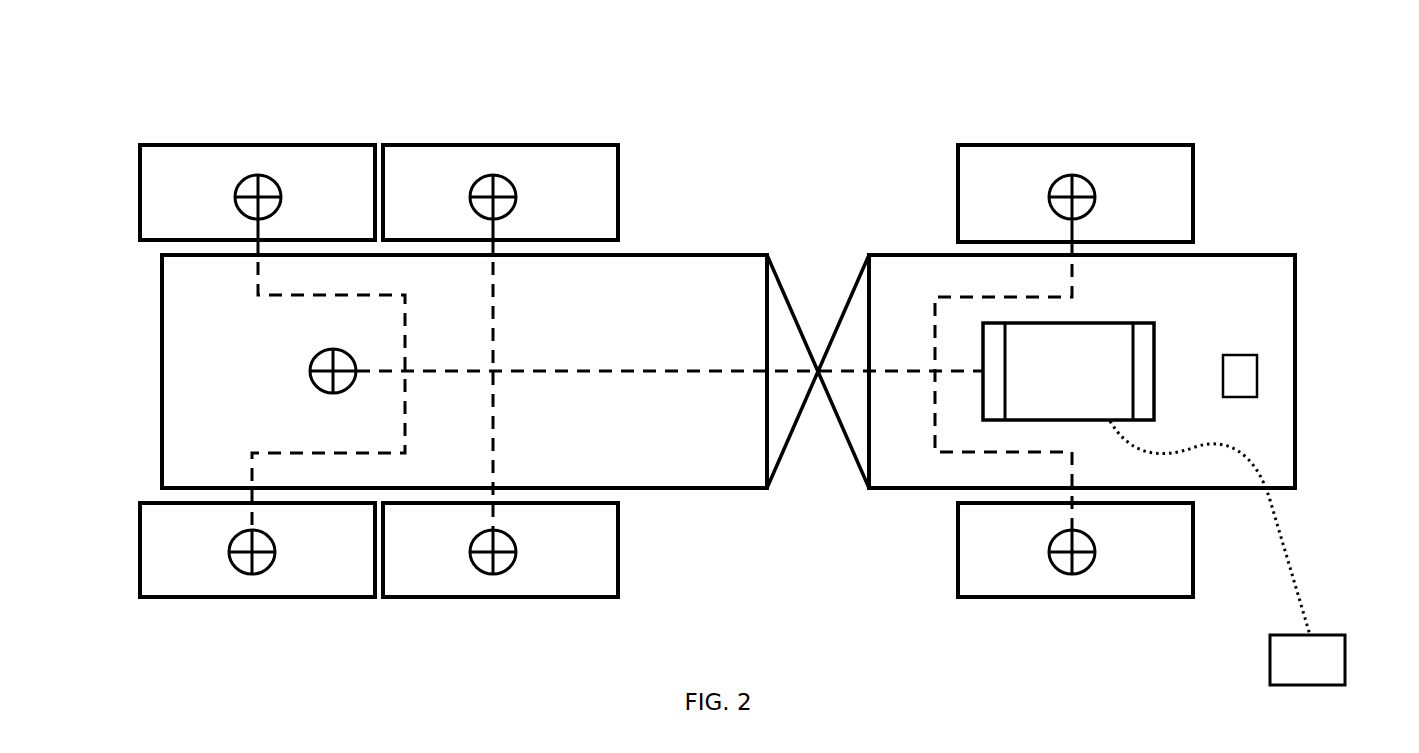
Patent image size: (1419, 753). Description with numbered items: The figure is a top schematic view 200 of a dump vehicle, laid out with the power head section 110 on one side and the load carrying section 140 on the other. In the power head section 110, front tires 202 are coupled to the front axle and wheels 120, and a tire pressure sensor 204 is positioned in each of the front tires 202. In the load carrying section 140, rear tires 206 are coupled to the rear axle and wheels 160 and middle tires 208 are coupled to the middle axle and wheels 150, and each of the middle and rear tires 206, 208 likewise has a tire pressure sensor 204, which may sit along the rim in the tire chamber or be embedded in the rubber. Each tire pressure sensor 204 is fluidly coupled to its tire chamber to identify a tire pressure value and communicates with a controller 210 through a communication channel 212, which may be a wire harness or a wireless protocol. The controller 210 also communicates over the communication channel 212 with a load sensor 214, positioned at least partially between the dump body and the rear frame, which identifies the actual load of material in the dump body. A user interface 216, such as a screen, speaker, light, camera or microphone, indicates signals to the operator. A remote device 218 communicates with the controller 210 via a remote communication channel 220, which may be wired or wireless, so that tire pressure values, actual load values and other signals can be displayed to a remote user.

The top schematic view 200 is at (1208, 74).
The power head section 110 is at (1240, 190).
The front axle and wheels 120 is at (1000, 112).
The load carrying section 140 is at (716, 140).
The middle axle and wheels 150 is at (561, 108).
The rear axle and wheels 160 is at (291, 110).
The front tires 202 is at (1147, 145).
The tire pressure sensor 204 is at (258, 177).
The rear tires 206 is at (140, 180).
The middle tires 208 is at (437, 145).
The controller 210 is at (1120, 362).
The communication channel 212 is at (630, 373).
The load sensor 214 is at (311, 380).
The user interface 216 is at (1243, 378).
The remote device 218 is at (1328, 648).
The remote communication channel 220 is at (1280, 517).